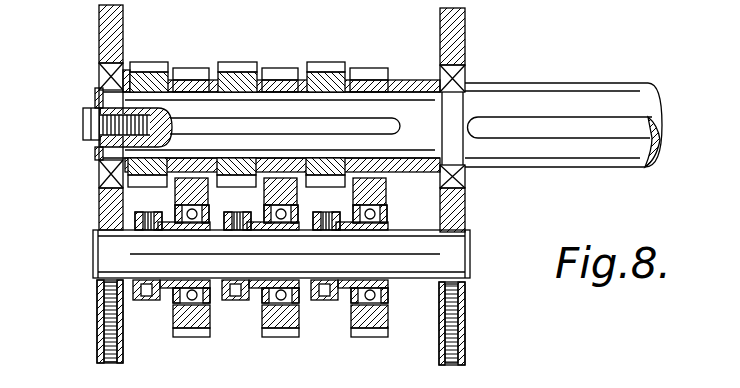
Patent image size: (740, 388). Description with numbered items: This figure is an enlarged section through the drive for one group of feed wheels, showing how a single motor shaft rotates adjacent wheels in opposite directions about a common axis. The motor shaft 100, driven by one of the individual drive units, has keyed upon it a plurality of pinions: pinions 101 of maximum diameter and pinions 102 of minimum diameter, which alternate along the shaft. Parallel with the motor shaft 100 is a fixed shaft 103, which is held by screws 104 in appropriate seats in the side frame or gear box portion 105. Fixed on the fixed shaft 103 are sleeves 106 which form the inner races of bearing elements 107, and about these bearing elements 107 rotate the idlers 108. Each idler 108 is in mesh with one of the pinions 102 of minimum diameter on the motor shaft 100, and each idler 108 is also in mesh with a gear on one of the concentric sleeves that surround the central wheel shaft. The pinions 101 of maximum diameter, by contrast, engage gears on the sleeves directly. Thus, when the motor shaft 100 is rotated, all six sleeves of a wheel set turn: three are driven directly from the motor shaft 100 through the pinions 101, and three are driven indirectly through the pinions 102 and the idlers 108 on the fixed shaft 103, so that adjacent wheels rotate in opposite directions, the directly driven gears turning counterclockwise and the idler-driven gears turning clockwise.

The motor shaft 100 is at (570, 98).
The pinion of maximum diameter 101 is at (158, 62).
The pinion of minimum diameter 102 is at (193, 70).
The fixed shaft 103 is at (456, 261).
The screw 104 is at (105, 324).
The side frame or gear box portion 105 is at (103, 203).
The sleeve 106 is at (149, 286).
The bearing element 107 is at (197, 294).
The idler 108 is at (187, 326).